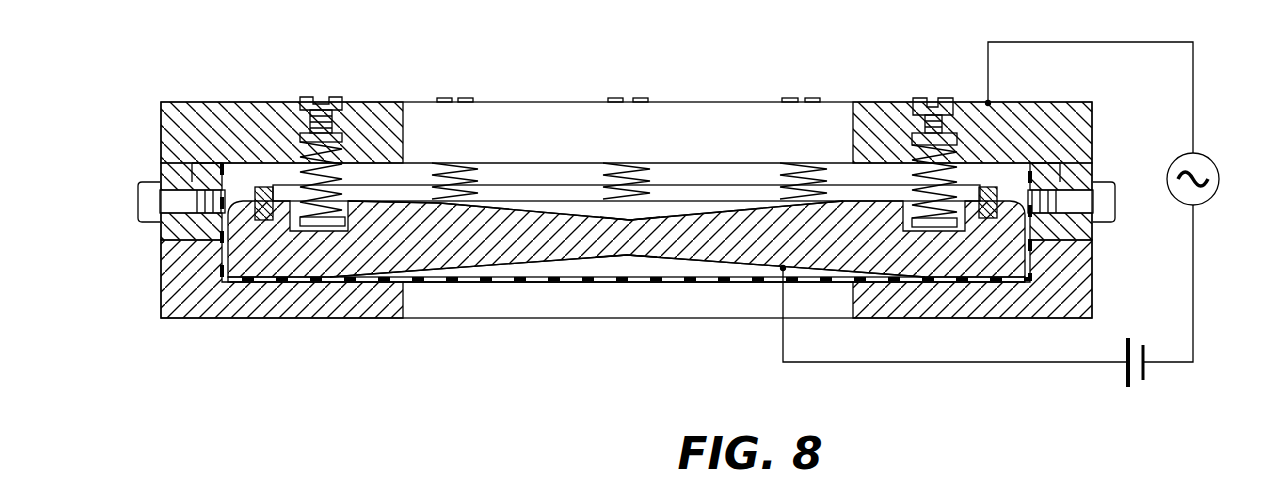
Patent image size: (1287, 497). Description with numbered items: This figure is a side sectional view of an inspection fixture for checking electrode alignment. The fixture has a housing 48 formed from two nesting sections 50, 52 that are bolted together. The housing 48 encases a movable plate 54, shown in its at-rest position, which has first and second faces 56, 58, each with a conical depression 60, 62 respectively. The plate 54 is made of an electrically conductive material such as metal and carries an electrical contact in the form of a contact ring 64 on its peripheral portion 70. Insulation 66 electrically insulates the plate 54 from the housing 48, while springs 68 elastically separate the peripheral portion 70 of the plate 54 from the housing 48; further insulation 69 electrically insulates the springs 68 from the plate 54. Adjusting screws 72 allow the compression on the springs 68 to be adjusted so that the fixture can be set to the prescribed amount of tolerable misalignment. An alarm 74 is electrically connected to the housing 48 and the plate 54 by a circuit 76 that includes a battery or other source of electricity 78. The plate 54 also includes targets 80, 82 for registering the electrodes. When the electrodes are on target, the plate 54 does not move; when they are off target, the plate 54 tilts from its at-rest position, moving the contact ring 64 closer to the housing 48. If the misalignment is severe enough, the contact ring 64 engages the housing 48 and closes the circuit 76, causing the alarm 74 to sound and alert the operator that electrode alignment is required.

The housing 48 is at (1093, 122).
The nesting section 50 is at (290, 102).
The nesting section 52 is at (245, 300).
The movable plate 54 is at (550, 257).
The first face 56 is at (405, 195).
The second face 58 is at (423, 282).
The conical depression 60 is at (643, 214).
The conical depression 62 is at (615, 270).
The contact ring 64 is at (263, 190).
The insulation 66 is at (290, 283).
The springs 68 is at (345, 196).
The insulation 69 is at (338, 233).
The peripheral portion 70 is at (232, 252).
The adjusting screws 72 is at (332, 100).
The alarm 74 is at (1205, 165).
The circuit 76 is at (1197, 92).
The battery or source of electricity 78 is at (1148, 375).
The target 80 is at (630, 223).
The target 82 is at (627, 258).